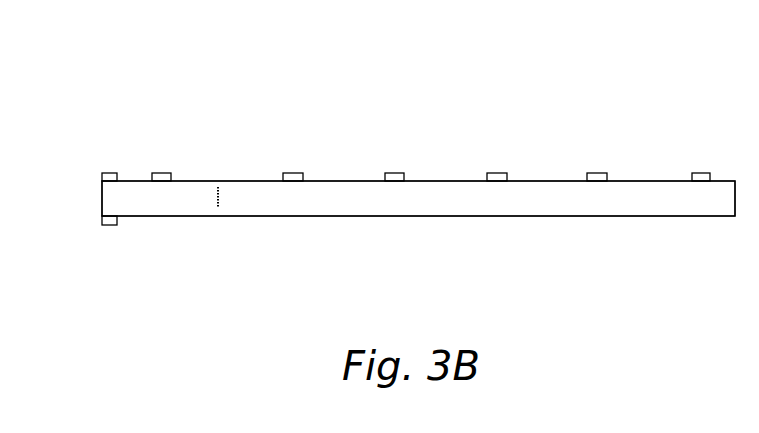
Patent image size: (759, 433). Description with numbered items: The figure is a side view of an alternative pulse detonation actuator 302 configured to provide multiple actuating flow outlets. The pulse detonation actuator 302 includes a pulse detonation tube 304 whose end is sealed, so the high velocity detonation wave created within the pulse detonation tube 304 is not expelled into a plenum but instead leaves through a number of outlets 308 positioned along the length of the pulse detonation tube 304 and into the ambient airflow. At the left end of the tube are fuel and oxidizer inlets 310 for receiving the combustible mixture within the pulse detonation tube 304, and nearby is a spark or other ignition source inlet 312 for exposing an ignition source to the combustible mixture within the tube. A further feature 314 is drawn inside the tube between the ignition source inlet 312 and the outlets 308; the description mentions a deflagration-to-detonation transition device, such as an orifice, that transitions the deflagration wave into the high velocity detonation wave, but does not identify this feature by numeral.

The pulse detonation actuator 302 is at (180, 78).
The pulse detonation tube 304 is at (365, 198).
The outlets 308 is at (717, 177).
The fuel and oxidizer inlets 310 is at (105, 176).
The ignition source inlet 312 is at (163, 172).
The fill line indicator 314 is at (208, 202).